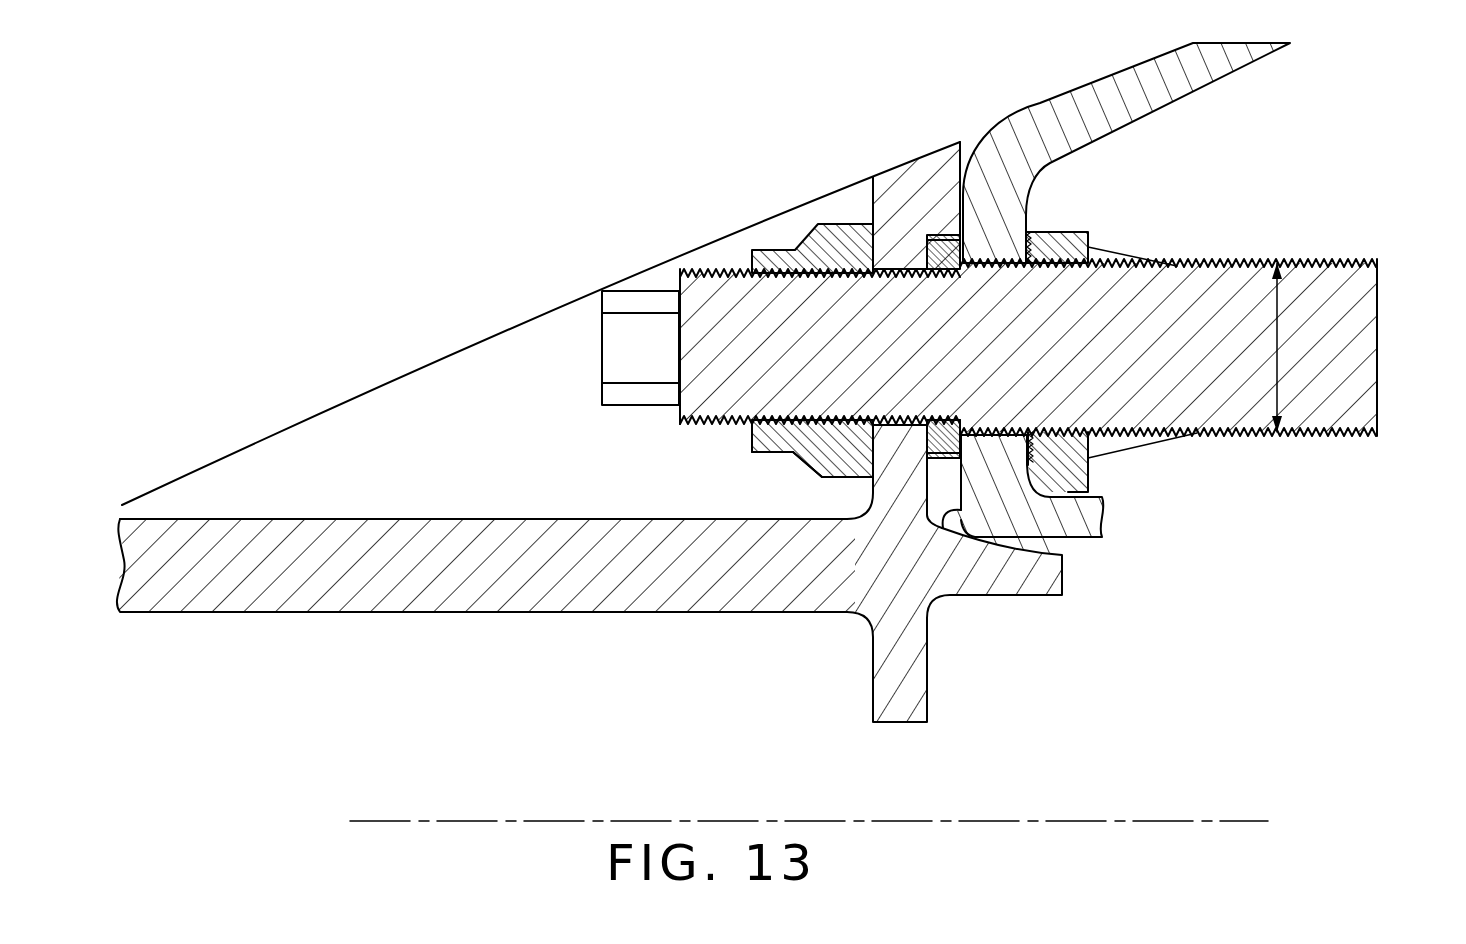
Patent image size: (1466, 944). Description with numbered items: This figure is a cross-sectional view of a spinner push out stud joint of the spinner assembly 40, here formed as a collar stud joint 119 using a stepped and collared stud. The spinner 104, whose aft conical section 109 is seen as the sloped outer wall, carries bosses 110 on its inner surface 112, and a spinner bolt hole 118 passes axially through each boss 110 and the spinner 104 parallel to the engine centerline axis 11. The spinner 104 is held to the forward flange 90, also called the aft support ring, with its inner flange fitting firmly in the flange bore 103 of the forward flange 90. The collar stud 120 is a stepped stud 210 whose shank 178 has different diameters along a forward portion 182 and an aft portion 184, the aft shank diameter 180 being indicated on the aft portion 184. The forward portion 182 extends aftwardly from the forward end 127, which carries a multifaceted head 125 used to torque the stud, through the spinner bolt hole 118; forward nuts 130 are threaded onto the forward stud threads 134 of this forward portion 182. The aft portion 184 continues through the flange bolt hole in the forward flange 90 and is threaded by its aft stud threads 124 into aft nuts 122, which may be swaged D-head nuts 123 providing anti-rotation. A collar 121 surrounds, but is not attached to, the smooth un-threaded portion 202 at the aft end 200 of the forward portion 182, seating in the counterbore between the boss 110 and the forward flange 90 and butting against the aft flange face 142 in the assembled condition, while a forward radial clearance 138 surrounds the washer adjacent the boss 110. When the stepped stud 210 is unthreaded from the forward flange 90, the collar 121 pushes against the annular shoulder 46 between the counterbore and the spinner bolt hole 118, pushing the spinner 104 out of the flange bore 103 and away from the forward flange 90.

The engine centerline axis 11 is at (1148, 821).
The spinner assembly 40 is at (583, 669).
The annular shoulder 46 is at (947, 252).
The forward flange 90 is at (1027, 233).
The flange bore 103 is at (1040, 532).
The spinner 104 is at (913, 160).
The aft conical section 109 is at (482, 339).
The boss 110 is at (873, 205).
The inner surface 112 is at (308, 420).
The spinner bolt hole 118 is at (895, 277).
The collar stud joint 119 is at (988, 250).
The collar stud 120 is at (1293, 300).
The collar 121 is at (984, 425).
The aft nut 122 is at (1088, 247).
The D-head nut 123 is at (1088, 458).
The aft stud threads 124 is at (1152, 266).
The multifaceted head 125 is at (640, 290).
The forward end 127 is at (714, 420).
The forward nut 130 is at (760, 453).
The forward stud threads 134 is at (725, 425).
The forward radial clearance 138 is at (927, 240).
The aft flange face 142 is at (1063, 587).
The shank 178 is at (1240, 433).
The aft shank diameter 180 is at (1272, 343).
The forward portion 182 is at (747, 307).
The aft portion 184 is at (1200, 407).
The aft end 200 is at (735, 383).
The smooth un-threaded portion 202 is at (926, 495).
The stepped stud 210 is at (1350, 303).